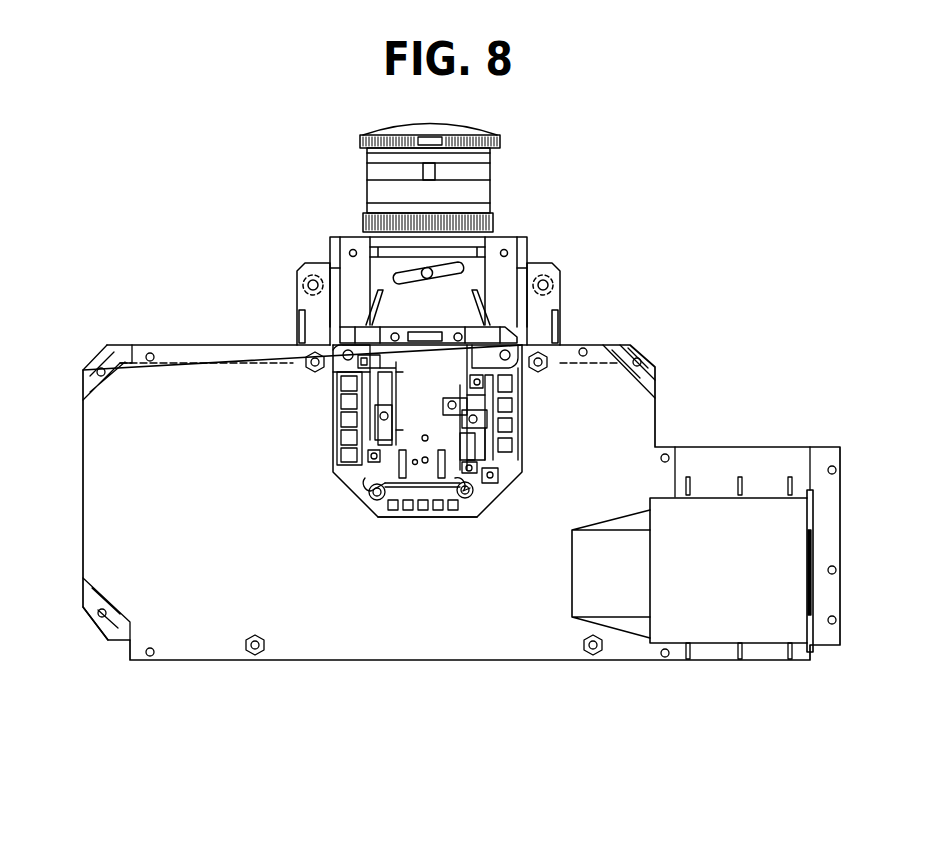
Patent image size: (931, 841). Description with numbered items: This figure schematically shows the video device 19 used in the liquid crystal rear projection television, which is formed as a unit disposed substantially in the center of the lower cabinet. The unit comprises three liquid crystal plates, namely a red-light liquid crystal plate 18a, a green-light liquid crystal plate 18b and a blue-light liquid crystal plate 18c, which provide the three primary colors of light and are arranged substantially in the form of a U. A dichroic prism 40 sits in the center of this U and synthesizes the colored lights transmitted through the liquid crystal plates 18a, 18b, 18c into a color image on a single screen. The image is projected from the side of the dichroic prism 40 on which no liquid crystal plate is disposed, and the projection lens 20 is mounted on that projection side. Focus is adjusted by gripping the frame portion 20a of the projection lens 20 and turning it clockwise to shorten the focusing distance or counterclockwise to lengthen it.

The video device 19 is at (600, 248).
The projection lens 20 is at (485, 173).
The frame portion 20a is at (360, 138).
The red-light liquid crystal plate 18a is at (530, 398).
The green-light liquid crystal plate 18b is at (422, 535).
The blue-light liquid crystal plate 18c is at (317, 405).
The dichroic prism 40 is at (442, 428).